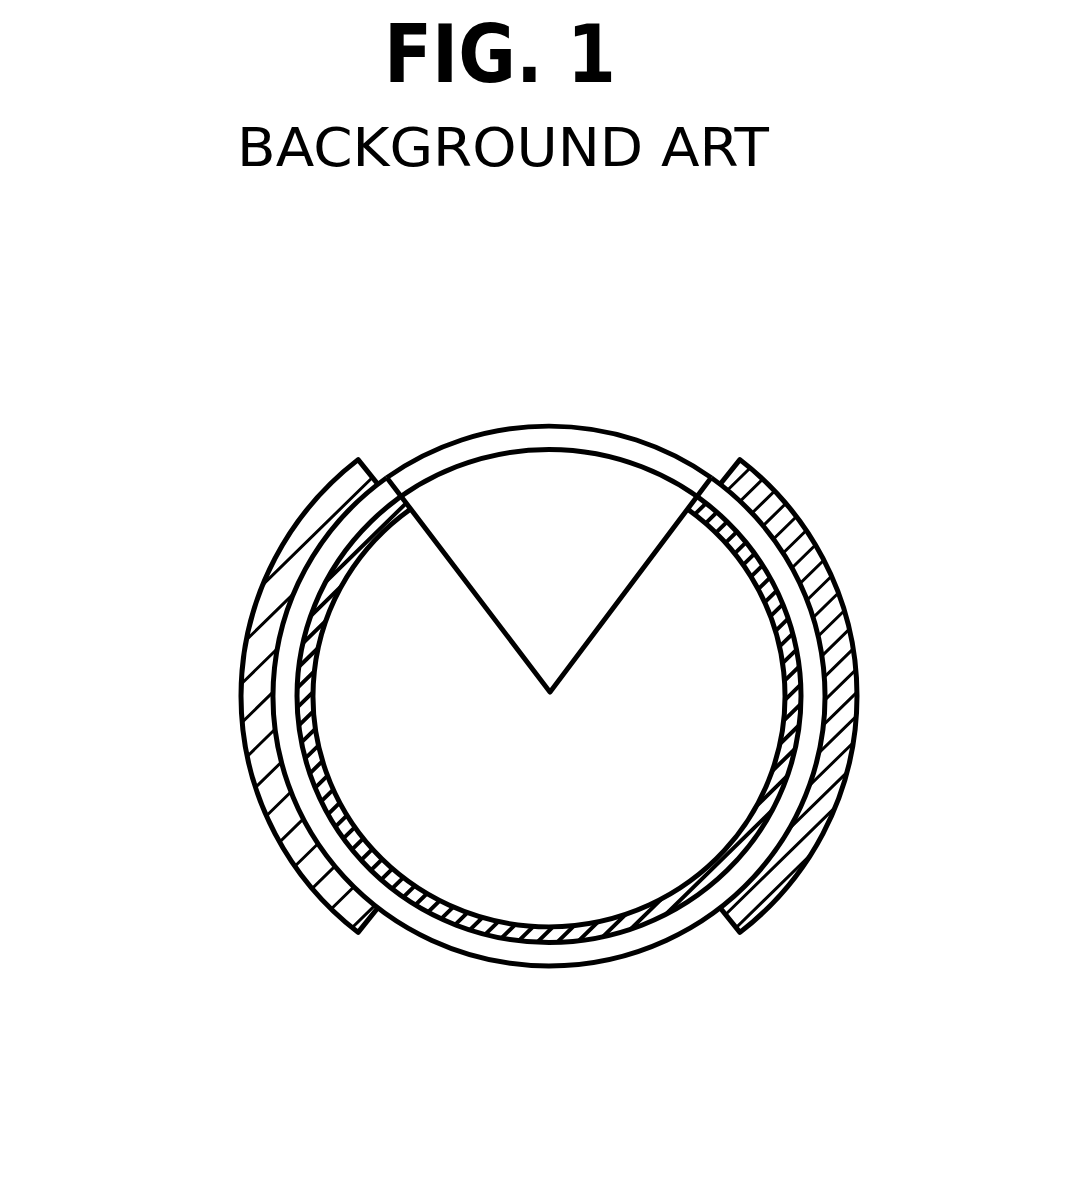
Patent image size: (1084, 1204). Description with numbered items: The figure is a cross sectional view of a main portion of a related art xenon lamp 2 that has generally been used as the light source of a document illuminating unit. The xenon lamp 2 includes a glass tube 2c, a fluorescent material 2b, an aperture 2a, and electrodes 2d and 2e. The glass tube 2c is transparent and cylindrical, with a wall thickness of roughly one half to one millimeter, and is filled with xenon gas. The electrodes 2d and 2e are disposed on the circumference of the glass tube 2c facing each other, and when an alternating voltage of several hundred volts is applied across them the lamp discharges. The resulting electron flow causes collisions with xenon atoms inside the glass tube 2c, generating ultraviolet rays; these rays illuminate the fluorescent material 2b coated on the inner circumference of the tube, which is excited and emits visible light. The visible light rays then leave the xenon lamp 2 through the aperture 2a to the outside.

The xenon lamp 2 is at (542, 696).
The aperture 2a is at (548, 468).
The fluorescent material 2b is at (550, 943).
The glass tube 2c is at (676, 924).
The electrode 2d is at (862, 684).
The electrode 2e is at (240, 688).